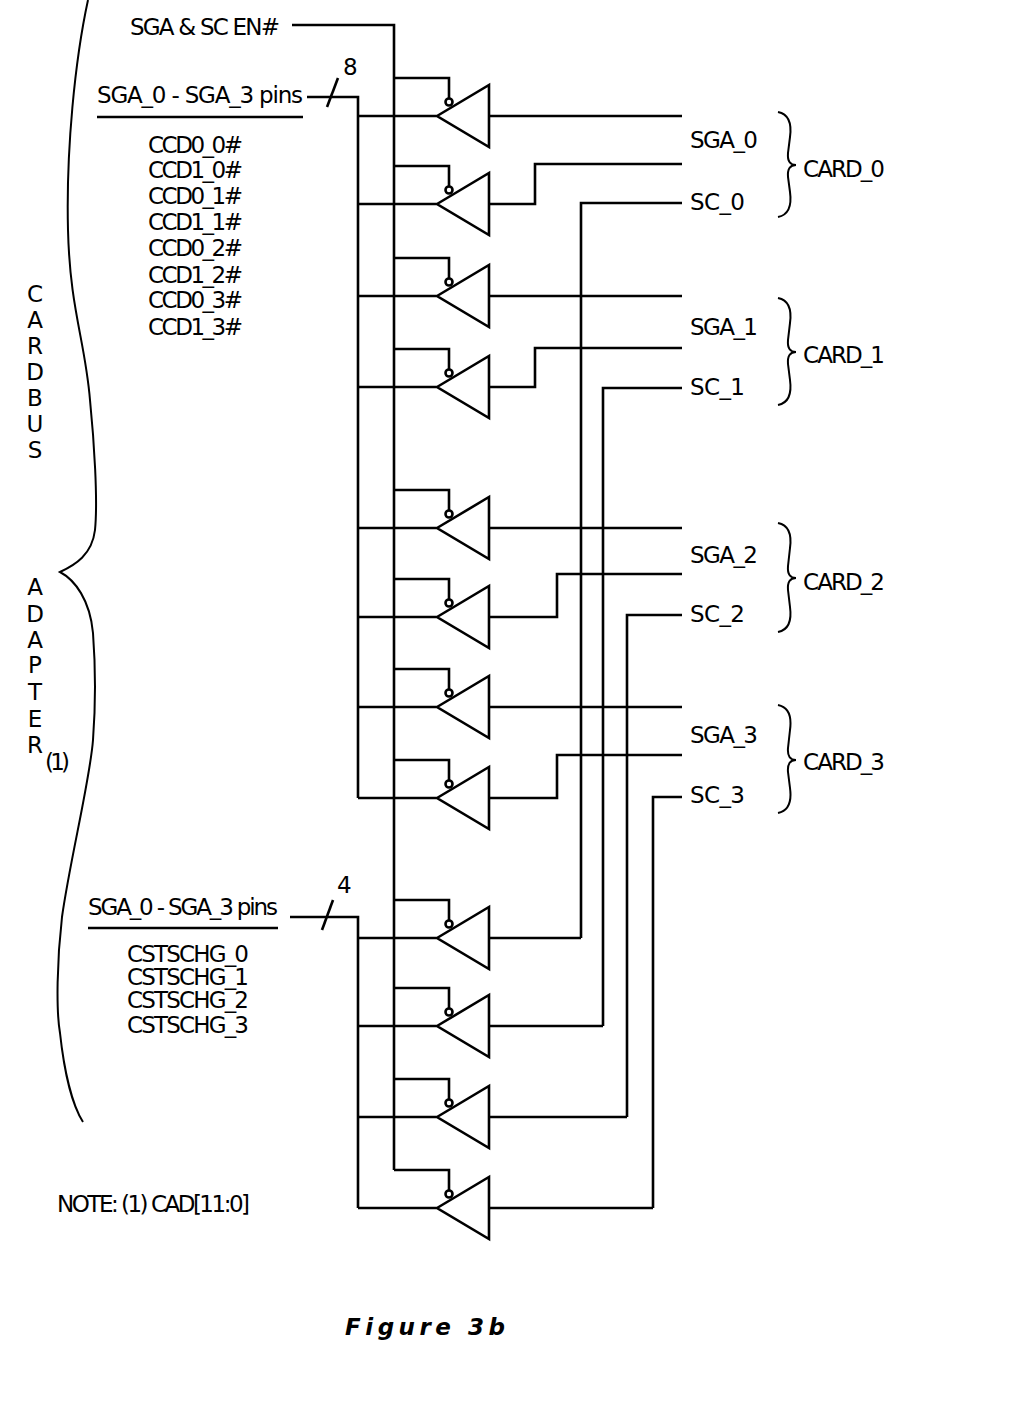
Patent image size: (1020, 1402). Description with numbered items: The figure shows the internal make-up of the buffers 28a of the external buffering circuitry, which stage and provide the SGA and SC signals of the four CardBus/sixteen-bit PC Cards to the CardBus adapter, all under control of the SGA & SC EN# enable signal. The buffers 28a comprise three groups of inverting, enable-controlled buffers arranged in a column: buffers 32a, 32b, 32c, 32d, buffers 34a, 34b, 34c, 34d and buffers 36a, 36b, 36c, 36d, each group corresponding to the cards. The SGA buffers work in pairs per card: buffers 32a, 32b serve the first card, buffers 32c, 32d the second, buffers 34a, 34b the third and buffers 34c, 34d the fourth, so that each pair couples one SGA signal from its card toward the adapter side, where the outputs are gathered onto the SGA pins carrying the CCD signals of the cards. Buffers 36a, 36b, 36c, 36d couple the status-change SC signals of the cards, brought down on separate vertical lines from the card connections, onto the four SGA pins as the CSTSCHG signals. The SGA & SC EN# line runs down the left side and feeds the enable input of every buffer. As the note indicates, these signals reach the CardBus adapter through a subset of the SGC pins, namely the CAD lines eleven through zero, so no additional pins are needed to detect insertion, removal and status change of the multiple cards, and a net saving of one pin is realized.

The buffers 28a is at (535, 24).
The buffer 32a is at (480, 123).
The buffer 32b is at (480, 211).
The buffer 32c is at (480, 303).
The buffer 32d is at (480, 394).
The buffer 34a is at (480, 535).
The buffer 34b is at (480, 624).
The buffer 34c is at (480, 714).
The buffer 34d is at (480, 805).
The buffer 36a is at (480, 945).
The buffer 36b is at (480, 1033).
The buffer 36c is at (480, 1124).
The buffer 36d is at (480, 1215).